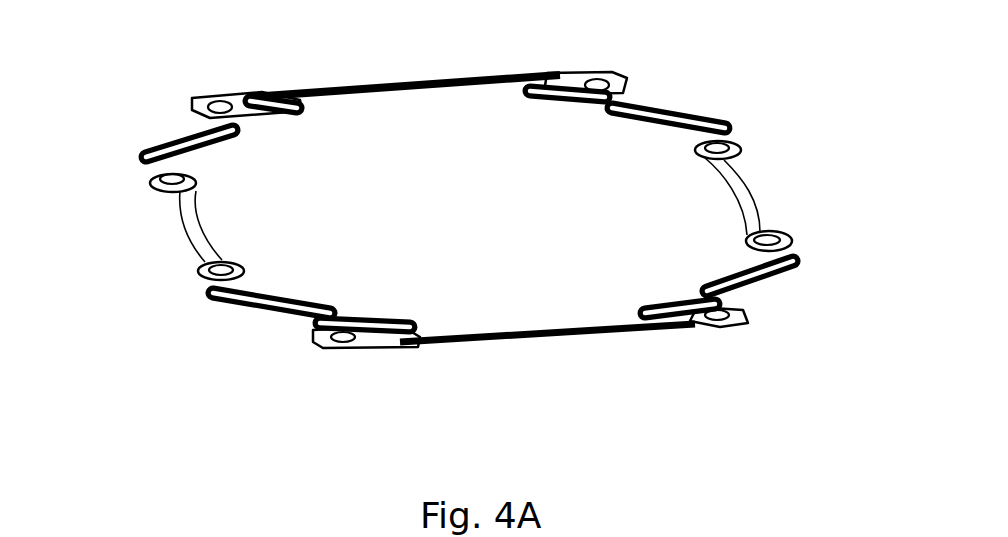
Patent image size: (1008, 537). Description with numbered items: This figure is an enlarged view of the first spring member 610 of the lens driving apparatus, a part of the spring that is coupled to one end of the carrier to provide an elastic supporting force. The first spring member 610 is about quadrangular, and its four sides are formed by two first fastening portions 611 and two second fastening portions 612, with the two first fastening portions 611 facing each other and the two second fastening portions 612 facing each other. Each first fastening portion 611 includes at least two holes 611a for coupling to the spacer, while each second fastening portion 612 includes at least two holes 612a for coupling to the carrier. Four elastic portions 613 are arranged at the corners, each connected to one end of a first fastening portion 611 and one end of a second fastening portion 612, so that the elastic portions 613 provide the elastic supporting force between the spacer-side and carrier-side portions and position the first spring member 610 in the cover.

The first spring member 610 is at (480, 247).
The first fastening portion 611 is at (396, 84).
The hole 611a is at (222, 100).
The second fastening portion 612 is at (750, 198).
The hole 612a is at (160, 181).
The elastic portion 613 is at (177, 132).